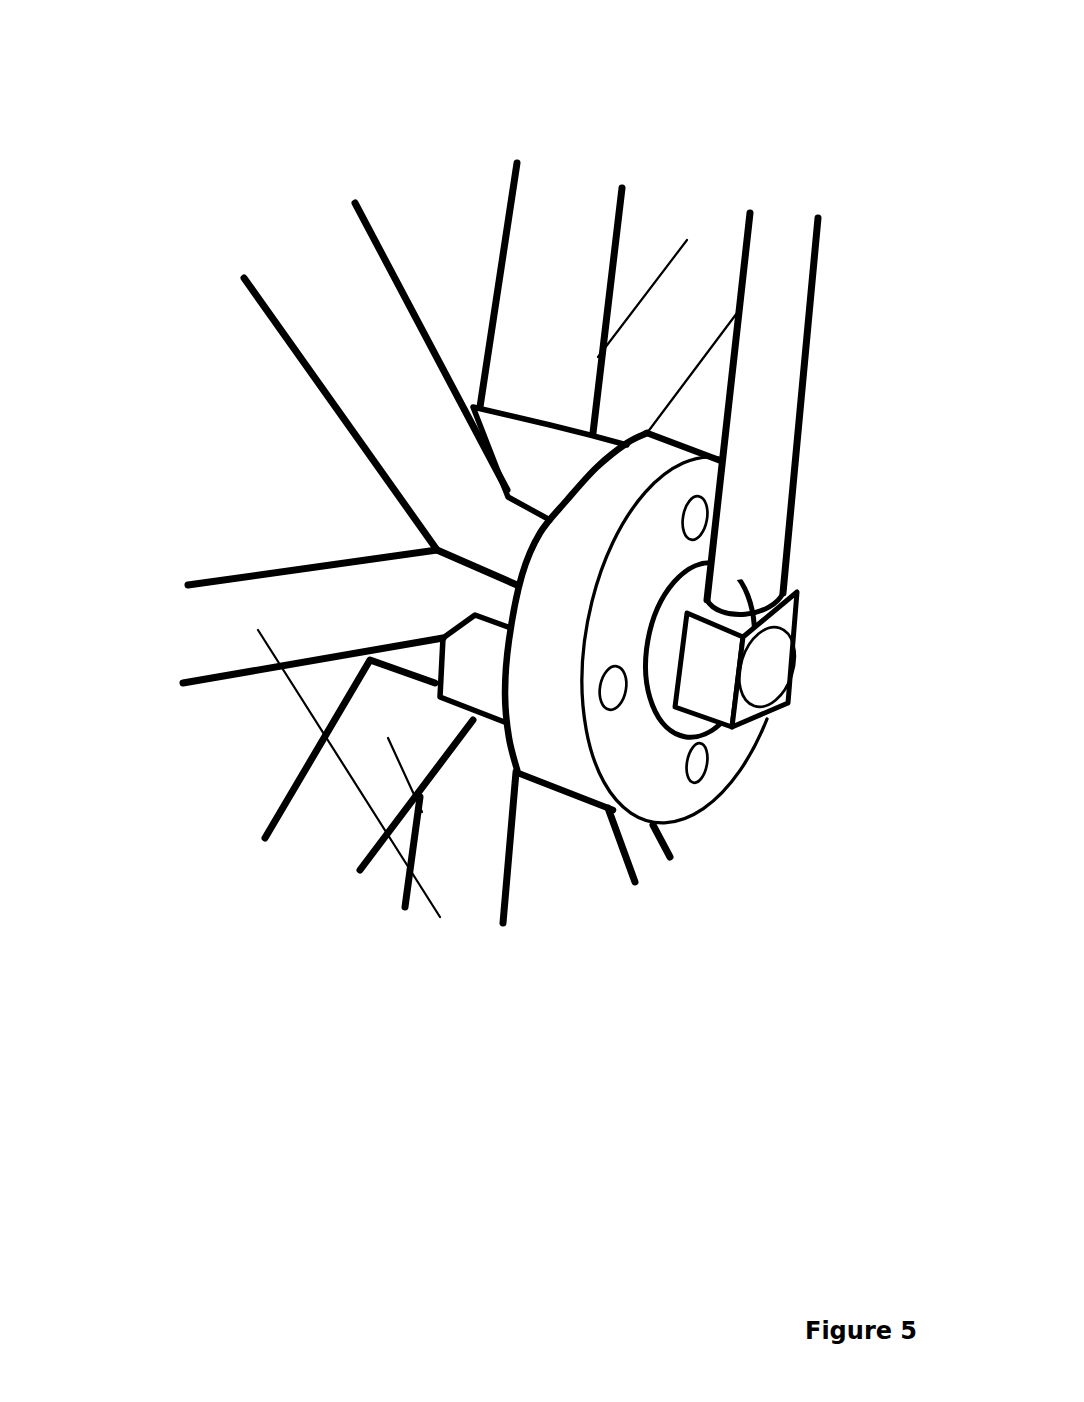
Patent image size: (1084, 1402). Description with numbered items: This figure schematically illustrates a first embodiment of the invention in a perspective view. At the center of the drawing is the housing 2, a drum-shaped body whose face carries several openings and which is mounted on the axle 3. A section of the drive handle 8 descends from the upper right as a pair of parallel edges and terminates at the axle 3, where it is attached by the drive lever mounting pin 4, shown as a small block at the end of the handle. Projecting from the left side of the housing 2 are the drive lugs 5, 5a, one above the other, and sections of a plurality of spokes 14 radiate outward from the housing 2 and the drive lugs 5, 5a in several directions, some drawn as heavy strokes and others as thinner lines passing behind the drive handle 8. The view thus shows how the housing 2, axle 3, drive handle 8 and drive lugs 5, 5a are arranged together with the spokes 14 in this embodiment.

The housing 2 is at (540, 728).
The axle 3 is at (768, 668).
The drive lever mounting pin 4 is at (787, 697).
The drive lug 5 is at (480, 660).
The drive lug 5a is at (507, 435).
The drive handle 8 is at (750, 572).
The spokes 14 is at (688, 300).